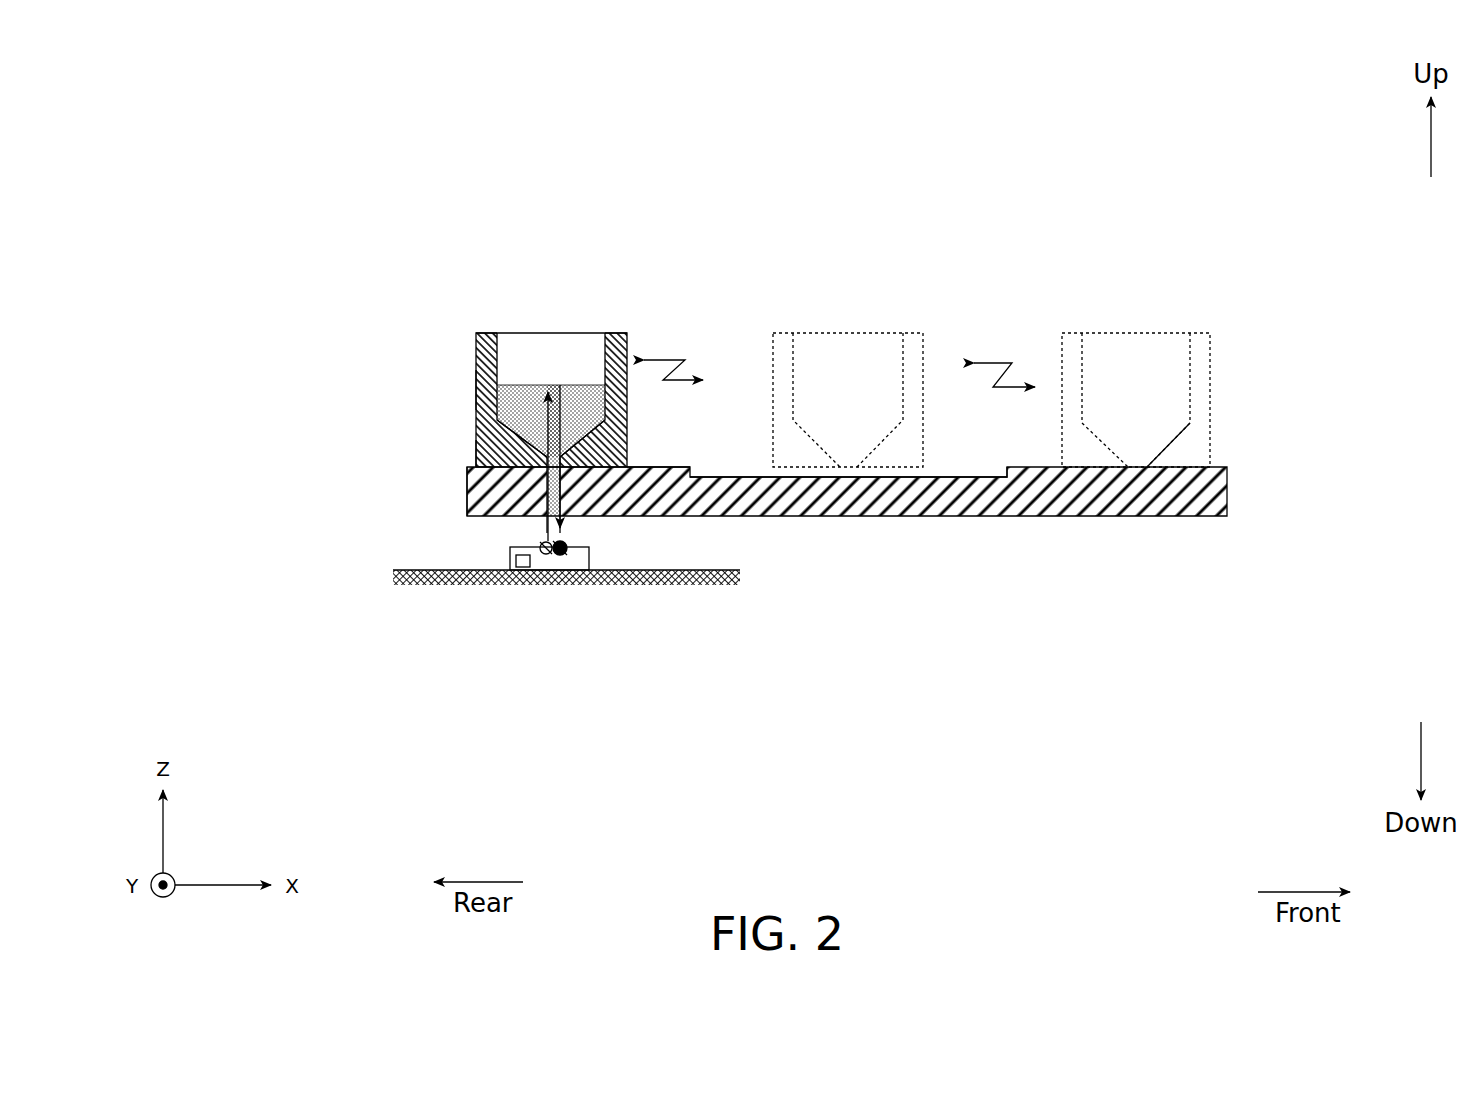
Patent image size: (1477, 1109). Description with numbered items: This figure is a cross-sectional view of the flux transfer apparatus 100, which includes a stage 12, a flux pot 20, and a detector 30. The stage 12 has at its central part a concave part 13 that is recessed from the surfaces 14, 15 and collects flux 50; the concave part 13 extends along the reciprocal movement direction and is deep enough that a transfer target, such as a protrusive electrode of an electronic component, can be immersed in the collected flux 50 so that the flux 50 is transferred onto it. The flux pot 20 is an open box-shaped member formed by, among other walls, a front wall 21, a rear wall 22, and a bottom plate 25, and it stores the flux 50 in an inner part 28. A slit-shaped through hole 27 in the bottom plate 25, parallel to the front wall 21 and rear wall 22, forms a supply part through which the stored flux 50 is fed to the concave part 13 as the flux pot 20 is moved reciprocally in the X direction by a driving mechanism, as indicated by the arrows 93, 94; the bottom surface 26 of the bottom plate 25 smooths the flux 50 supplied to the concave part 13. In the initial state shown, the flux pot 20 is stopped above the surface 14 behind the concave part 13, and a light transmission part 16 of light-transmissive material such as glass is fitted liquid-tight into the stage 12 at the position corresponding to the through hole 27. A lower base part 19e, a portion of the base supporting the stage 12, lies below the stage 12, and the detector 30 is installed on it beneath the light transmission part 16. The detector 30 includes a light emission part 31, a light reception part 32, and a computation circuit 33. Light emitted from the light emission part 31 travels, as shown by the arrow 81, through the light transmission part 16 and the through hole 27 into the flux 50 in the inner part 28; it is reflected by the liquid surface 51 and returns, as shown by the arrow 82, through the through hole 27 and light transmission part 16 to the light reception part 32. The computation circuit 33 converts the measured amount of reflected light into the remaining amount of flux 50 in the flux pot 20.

The flux transfer apparatus 100 is at (155, 136).
The stage 12 is at (1227, 487).
The concave part 13 is at (1000, 478).
The surface 14 is at (648, 467).
The surface 15 is at (1192, 463).
The light transmission part 16 is at (545, 513).
The lower base part 19e is at (700, 570).
The flux pot 20 is at (478, 350).
The front wall 21 is at (618, 333).
The rear wall 22 is at (482, 333).
The bottom plate 25 is at (477, 452).
The bottom surface 26 is at (467, 493).
The through hole 27 is at (477, 388).
The inner part 28 is at (598, 400).
The detector 30 is at (589, 558).
The light emission part 31 is at (541, 556).
The light reception part 32 is at (563, 557).
The computation circuit 33 is at (528, 563).
The flux 50 is at (570, 400).
The liquid surface 51 is at (542, 445).
The arrow 81 is at (543, 532).
The arrow 82 is at (543, 525).
The arrow 93 is at (668, 350).
The arrow 94 is at (1010, 355).